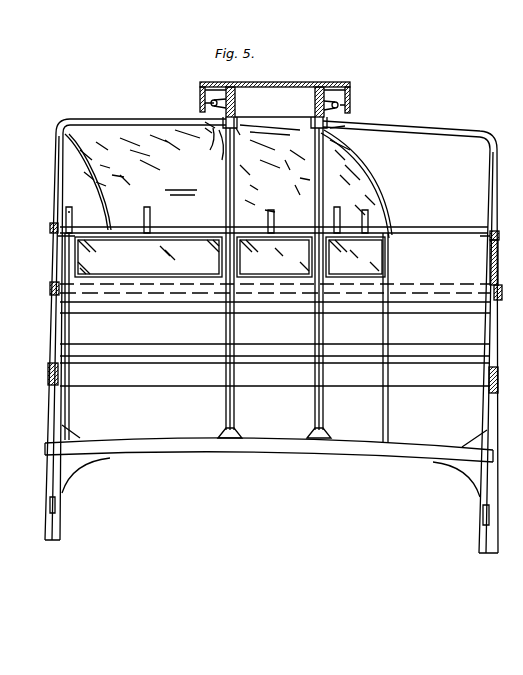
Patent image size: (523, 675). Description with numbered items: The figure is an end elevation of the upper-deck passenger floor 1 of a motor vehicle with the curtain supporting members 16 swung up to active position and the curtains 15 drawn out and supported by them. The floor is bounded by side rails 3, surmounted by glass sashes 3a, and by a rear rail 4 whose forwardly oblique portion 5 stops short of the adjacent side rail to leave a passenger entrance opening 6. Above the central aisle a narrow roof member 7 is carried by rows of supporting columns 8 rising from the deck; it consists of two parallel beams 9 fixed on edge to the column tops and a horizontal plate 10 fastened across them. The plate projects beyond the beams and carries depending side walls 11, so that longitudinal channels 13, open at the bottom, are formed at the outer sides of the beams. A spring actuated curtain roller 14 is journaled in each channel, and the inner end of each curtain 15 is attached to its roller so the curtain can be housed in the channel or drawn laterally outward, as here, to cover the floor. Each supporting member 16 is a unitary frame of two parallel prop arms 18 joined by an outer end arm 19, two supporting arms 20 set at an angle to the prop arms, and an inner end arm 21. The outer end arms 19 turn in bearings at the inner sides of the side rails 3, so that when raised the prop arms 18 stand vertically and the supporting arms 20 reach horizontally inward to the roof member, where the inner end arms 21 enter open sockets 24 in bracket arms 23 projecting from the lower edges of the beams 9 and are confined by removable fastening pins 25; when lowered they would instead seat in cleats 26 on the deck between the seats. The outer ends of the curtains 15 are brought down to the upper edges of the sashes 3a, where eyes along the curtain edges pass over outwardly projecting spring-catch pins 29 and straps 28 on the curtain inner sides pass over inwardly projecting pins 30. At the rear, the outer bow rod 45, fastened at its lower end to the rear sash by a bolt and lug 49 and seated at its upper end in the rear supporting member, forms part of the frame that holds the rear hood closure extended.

The passenger floor 1 is at (310, 443).
The side rail 3 is at (49, 288).
The glass panel or sash 3a is at (52, 262).
The rear rail 4 is at (258, 286).
The oblique portion of rear rail 5 is at (392, 296).
The passenger entrance opening 6 is at (453, 264).
The roof section or member 7 is at (237, 98).
The supporting column 8 is at (315, 170).
The beam 9 is at (308, 93).
The horizontal board or plate 10 is at (340, 83).
The depending side wall 11 is at (212, 95).
The longitudinal channel 13 is at (200, 100).
The spring actuated curtain roller 14 is at (226, 84).
The curtain 15 is at (117, 118).
The curtain supporting member 16 is at (75, 132).
The prop arm 18 is at (66, 183).
The outer end arm 19 is at (68, 288).
The supporting arm 20 is at (205, 125).
The inner end arm 21 is at (213, 128).
The bracket arm 23 is at (233, 132).
The open socket 24 is at (219, 130).
The removable fastening pin 25 is at (189, 188).
The cleat 26 is at (310, 433).
The strap 28 is at (57, 226).
The button or pin 29 is at (52, 233).
The pin 30 is at (76, 236).
The outer bow rod 45 is at (104, 166).
The lug 49 is at (193, 228).